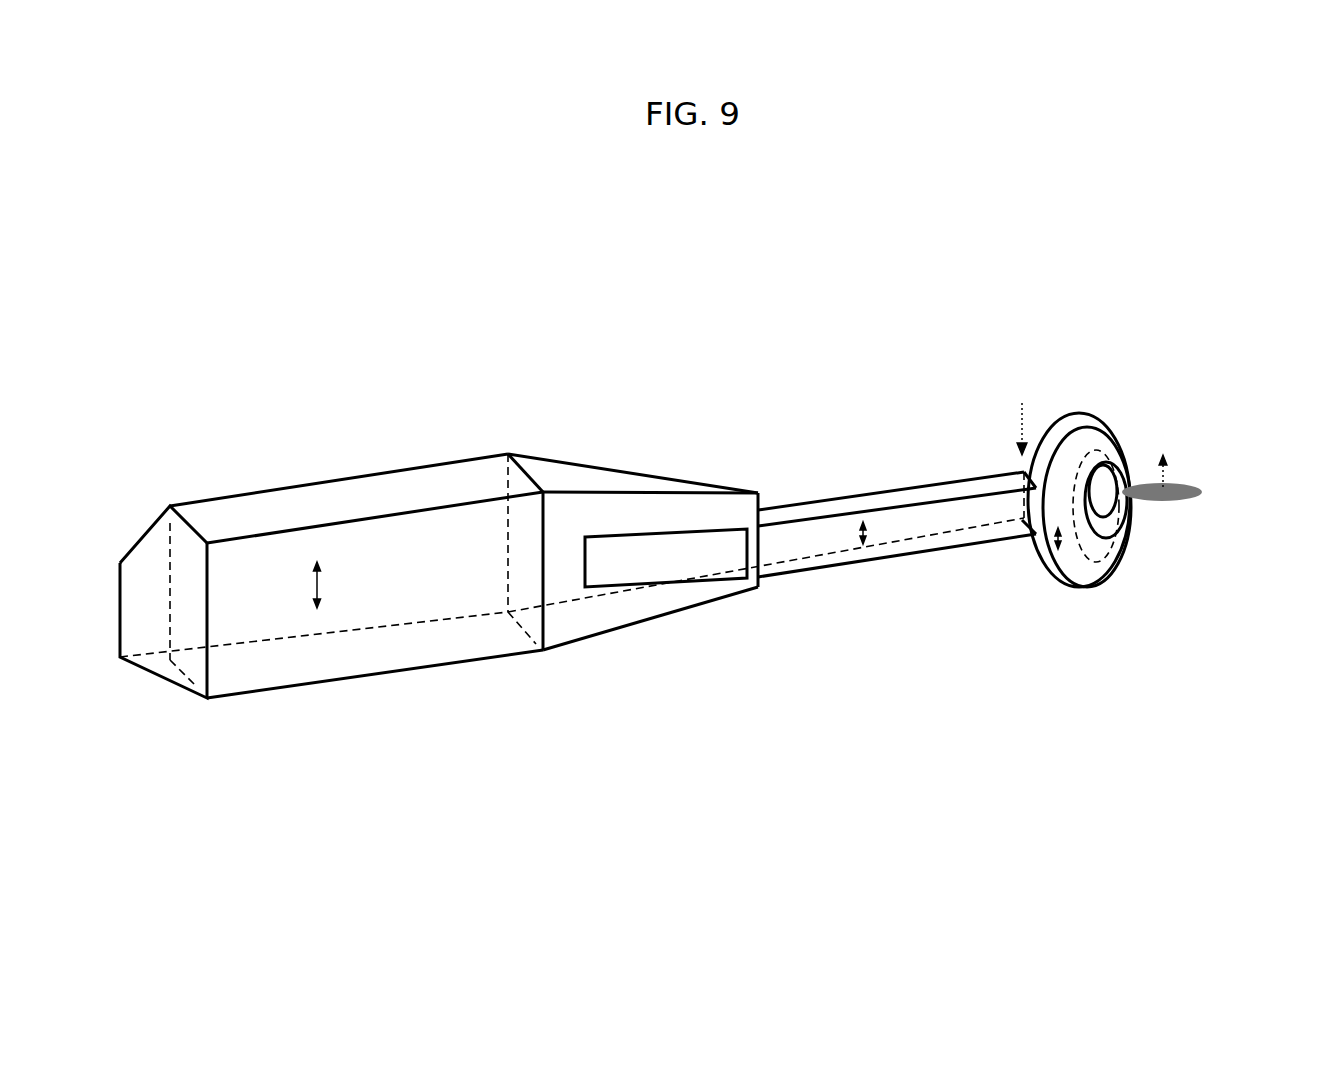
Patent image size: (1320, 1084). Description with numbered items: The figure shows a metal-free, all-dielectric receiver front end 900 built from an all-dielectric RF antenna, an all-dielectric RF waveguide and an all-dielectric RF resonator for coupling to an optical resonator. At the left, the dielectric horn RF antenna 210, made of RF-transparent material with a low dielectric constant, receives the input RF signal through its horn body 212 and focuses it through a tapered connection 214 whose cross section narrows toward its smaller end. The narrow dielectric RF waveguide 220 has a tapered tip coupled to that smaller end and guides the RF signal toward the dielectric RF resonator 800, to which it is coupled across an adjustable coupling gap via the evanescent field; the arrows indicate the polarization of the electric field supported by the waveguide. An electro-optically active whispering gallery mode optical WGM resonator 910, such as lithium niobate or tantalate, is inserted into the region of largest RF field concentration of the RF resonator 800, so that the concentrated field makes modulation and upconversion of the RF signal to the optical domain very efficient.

The RF-to-optical coupling system 900 is at (318, 235).
The horn RF antenna 210 is at (450, 667).
The horn antenna body 212 is at (327, 498).
The tapered waveguide 214 is at (668, 612).
The narrow dielectric RF waveguide 220 is at (797, 507).
The RF resonator 800 is at (1102, 567).
The whispering gallery mode resonator 910 is at (1200, 488).